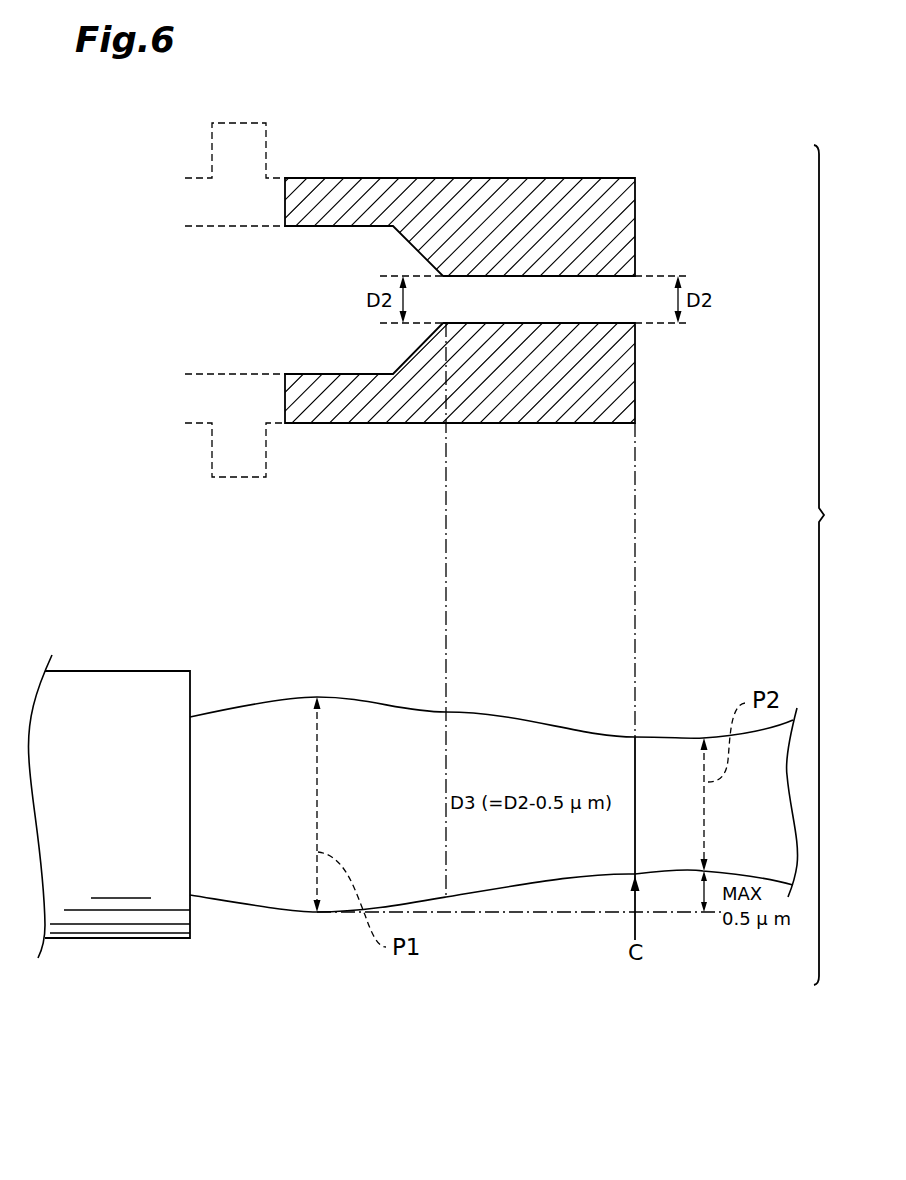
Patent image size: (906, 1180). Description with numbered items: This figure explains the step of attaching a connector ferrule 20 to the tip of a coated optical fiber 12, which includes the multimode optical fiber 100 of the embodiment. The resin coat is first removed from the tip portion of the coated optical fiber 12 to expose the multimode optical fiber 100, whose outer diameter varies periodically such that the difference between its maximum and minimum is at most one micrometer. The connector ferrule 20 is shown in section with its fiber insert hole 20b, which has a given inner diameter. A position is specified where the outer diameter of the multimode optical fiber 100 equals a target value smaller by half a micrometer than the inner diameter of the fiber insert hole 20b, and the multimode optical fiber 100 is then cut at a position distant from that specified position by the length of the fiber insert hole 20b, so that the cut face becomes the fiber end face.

The connector ferrule 20 is at (557, 193).
The fiber insert hole 20b is at (618, 300).
The multimode optical fiber 100 is at (250, 877).
The coated optical fiber 12 is at (119, 916).